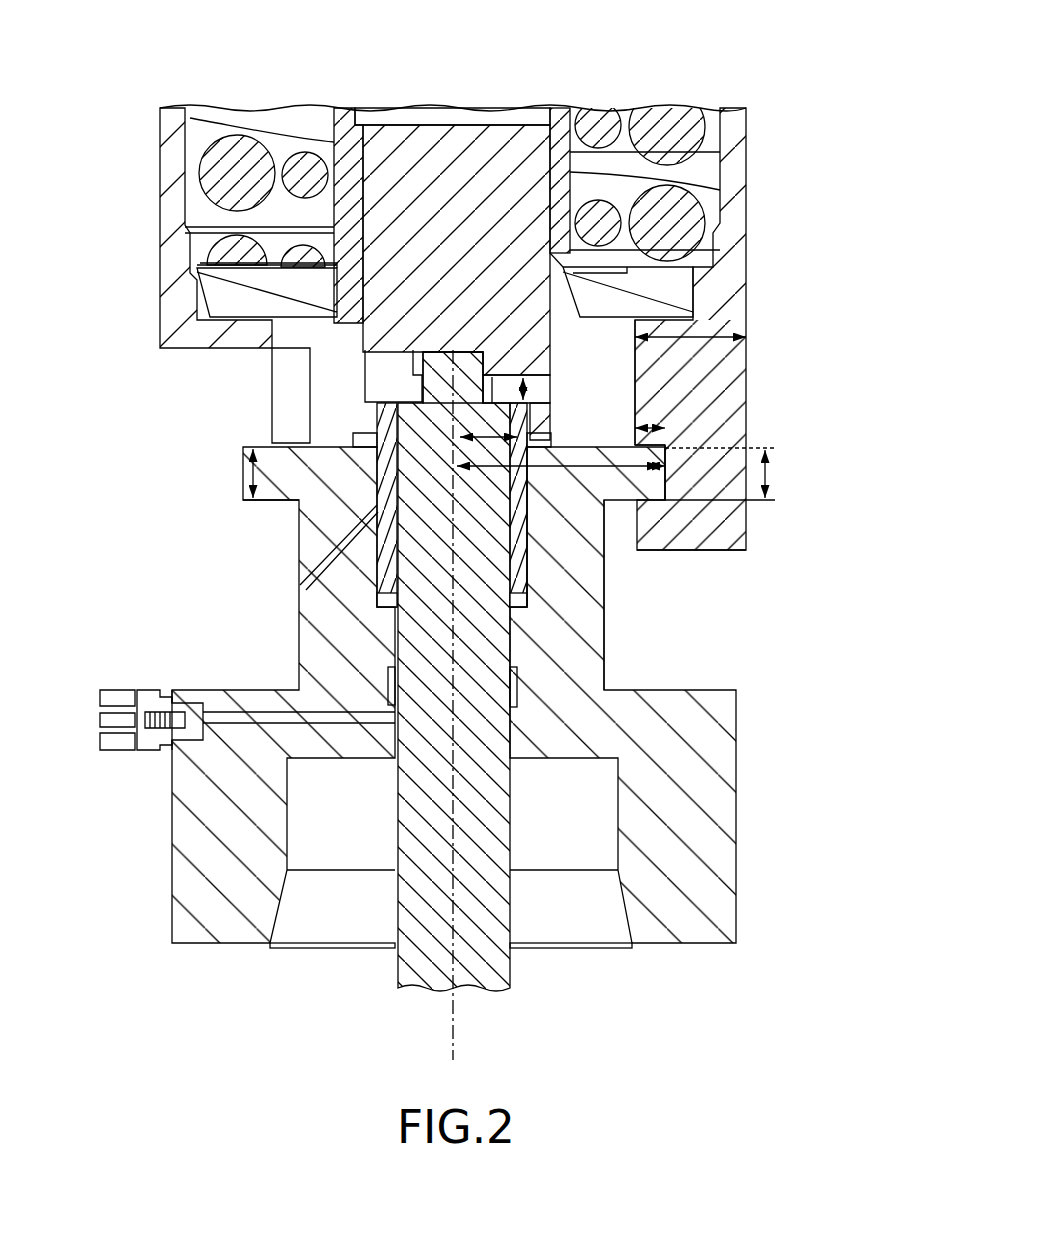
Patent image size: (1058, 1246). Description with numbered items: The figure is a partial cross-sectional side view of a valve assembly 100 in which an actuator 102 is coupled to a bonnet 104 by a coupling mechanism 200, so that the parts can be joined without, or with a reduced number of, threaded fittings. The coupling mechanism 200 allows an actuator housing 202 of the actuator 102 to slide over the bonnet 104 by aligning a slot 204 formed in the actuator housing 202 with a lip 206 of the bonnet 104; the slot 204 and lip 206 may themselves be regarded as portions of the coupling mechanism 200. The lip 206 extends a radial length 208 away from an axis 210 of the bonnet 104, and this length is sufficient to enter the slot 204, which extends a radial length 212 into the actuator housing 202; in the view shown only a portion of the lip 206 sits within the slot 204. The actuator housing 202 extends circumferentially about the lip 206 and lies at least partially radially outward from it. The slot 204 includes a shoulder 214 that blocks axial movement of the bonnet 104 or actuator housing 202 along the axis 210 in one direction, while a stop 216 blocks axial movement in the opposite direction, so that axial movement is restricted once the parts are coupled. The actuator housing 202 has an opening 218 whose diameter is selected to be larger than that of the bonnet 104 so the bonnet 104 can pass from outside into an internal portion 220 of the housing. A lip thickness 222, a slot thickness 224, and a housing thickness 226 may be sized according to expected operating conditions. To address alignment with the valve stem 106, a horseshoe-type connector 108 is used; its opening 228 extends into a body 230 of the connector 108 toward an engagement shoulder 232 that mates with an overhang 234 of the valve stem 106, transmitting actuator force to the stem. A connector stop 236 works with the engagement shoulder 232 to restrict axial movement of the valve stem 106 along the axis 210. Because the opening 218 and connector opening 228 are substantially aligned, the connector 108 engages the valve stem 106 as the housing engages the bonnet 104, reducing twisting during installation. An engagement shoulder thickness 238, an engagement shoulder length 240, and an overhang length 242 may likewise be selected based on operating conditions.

The valve assembly 100 is at (820, 88).
The actuator 102 is at (822, 283).
The bonnet 104 is at (808, 735).
The valve stem 106 is at (487, 877).
The connector 108 is at (480, 128).
The coupling mechanism 200 is at (830, 445).
The actuator housing 202 is at (720, 395).
The slot 204 is at (655, 442).
The lip 206 is at (623, 487).
The radial length 208 is at (590, 463).
The axis 210 is at (470, 1040).
The radial length 212 is at (649, 426).
The shoulder 214 is at (667, 487).
The stop 216 is at (655, 455).
The opening 218 is at (150, 388).
The internal portion 220 is at (242, 552).
The lip thickness 222 is at (245, 475).
The slot thickness 224 is at (770, 475).
The housing thickness 226 is at (710, 330).
The opening 228 is at (340, 362).
The body 230 is at (390, 317).
The engagement shoulder 232 is at (493, 376).
The overhang 234 is at (520, 358).
The connector stop 236 is at (483, 347).
The engagement shoulder thickness 238 is at (527, 392).
The engagement shoulder length 240 is at (490, 440).
The overhang length 242 is at (422, 347).